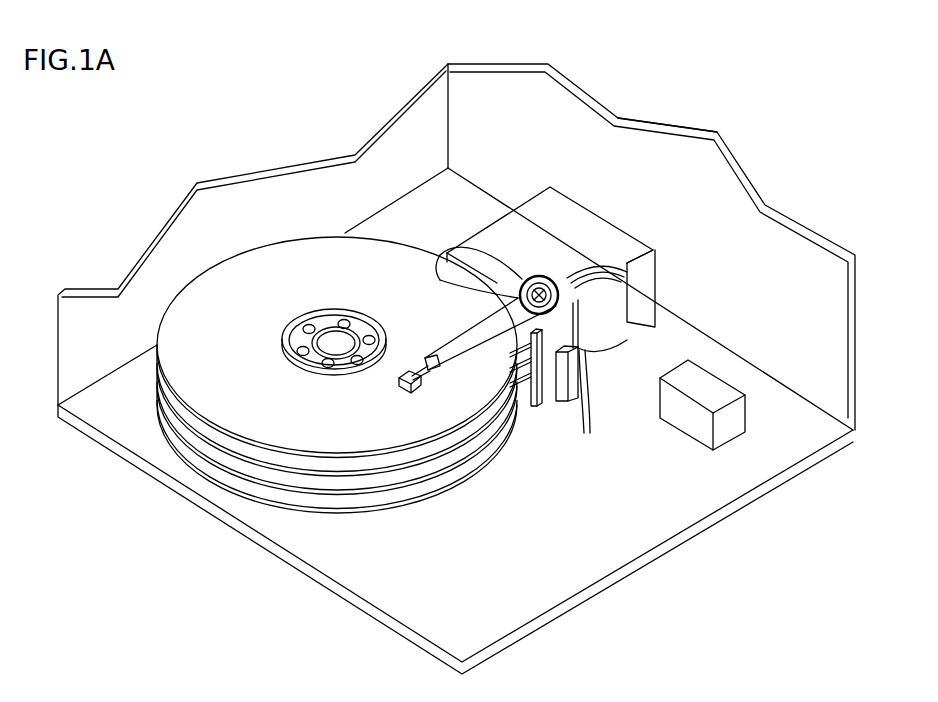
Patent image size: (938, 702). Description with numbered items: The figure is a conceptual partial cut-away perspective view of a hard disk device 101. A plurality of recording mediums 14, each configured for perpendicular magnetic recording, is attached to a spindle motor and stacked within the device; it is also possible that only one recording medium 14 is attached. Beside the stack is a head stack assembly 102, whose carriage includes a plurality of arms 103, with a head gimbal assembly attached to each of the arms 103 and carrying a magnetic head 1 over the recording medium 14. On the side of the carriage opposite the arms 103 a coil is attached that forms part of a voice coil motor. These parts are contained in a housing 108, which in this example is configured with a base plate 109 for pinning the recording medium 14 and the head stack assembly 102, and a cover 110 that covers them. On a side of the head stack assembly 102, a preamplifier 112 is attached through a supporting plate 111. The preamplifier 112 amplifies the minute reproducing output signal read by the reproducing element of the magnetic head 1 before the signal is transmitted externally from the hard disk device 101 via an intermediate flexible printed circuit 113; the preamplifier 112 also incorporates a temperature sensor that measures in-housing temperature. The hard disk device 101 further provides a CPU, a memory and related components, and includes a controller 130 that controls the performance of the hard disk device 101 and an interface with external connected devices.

The hard disk device 101 is at (292, 105).
The magnetic head 1 is at (408, 398).
The recording medium 14 is at (195, 378).
The head stack assembly 102 is at (577, 309).
The arm 103 is at (468, 345).
The housing 108 is at (678, 132).
The base plate 109 is at (677, 518).
The cover 110 is at (527, 85).
The supporting plate 111 is at (540, 406).
The preamplifier 112 is at (560, 406).
The intermediate flexible printed circuit 113 is at (588, 412).
The controller 130 is at (722, 427).